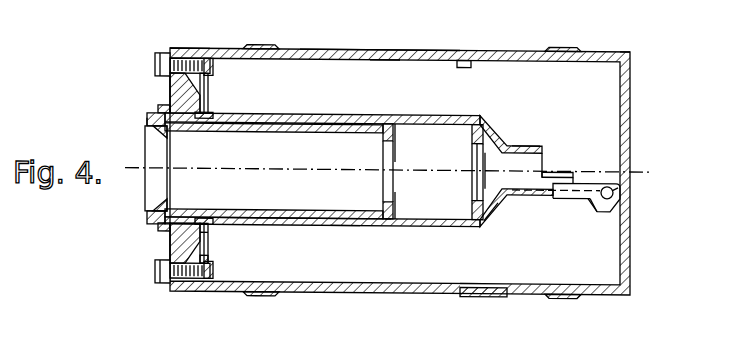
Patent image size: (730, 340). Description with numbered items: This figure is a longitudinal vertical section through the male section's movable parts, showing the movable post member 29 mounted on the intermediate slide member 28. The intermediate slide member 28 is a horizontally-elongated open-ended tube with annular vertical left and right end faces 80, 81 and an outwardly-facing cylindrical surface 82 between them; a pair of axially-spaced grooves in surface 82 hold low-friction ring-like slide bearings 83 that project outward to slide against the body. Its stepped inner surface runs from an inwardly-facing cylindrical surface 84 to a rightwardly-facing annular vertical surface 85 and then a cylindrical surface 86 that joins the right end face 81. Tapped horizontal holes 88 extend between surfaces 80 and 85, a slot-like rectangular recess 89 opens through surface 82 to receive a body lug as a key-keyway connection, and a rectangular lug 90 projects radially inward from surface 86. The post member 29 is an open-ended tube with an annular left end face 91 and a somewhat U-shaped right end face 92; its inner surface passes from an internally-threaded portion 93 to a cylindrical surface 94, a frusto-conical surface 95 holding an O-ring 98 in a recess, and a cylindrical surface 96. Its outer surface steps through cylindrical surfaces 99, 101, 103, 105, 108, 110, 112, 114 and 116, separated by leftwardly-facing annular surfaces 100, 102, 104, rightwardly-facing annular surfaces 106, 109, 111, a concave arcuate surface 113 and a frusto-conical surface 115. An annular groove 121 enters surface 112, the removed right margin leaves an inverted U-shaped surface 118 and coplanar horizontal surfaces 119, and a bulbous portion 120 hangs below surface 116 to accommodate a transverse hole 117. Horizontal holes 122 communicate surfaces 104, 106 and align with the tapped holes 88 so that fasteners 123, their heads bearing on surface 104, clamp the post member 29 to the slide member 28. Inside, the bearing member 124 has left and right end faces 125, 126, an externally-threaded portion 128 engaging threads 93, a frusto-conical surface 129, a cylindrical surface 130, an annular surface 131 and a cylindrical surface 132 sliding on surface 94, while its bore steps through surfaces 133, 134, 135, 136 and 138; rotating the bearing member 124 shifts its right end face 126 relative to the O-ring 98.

The intermediate slide member 28 is at (633, 91).
The movable post member 29 is at (508, 131).
The left end face 80 is at (188, 48).
The right end face 81 is at (632, 52).
The outwardly-facing horizontal cylindrical surface 82 is at (378, 48).
The slide bearings 83 is at (258, 43).
The inwardly-facing horizontal cylindrical surface 84 is at (209, 90).
The rightwardly-facing annular vertical surface 85 is at (214, 70).
The inwardly-facing horizontal cylindrical surface 86 is at (386, 60).
The tapped horizontal holes 88 is at (193, 52).
The slot-like rectangular recess 89 is at (468, 295).
The rectangular lug 90 is at (465, 66).
The left end face 91 is at (150, 118).
The right end face 92 is at (620, 190).
The internally-threaded portion 93 is at (150, 124).
The inwardly-facing horizontal cylindrical surface 94 is at (440, 217).
The frusto-conical surface 95 is at (484, 150).
The inwardly-facing horizontal cylindrical surface 96 is at (537, 186).
The O-ring 98 is at (471, 135).
The outwardly-facing horizontal cylindrical surface 99 is at (160, 109).
The leftwardly-facing annular vertical surface 100 is at (162, 229).
The outwardly-facing horizontal cylindrical surface 101 is at (170, 100).
The leftwardly-facing annular vertical surface 102 is at (170, 236).
The outwardly-facing horizontal cylindrical surface 103 is at (175, 95).
The leftwardly-facing annular vertical surface 104 is at (175, 246).
The outwardly-facing horizontal cylindrical surface 105 is at (167, 285).
The rightwardly-facing annular vertical surface 106 is at (180, 291).
The outwardly-facing horizontal cylindrical surface 108 is at (197, 291).
The rightwardly-facing annular vertical surface 109 is at (208, 262).
The outwardly-facing horizontal cylindrical surface 110 is at (210, 250).
The rightwardly-facing annular vertical surface 111 is at (206, 245).
The outwardly-facing horizontal cylindrical surface 112 is at (210, 236).
The annular concave arcuate surface 113 is at (214, 228).
The outwardly-facing horizontal cylindrical surface 114 is at (345, 225).
The frusto-conical surface 115 is at (491, 216).
The outwardly-facing horizontal cylindrical surface 116 is at (580, 196).
The transverse hole 117 is at (596, 207).
The inverted U-shaped vertical surface 118 is at (546, 165).
The coplanar horizontal surfaces 119 is at (574, 169).
The bulbous portion 120 is at (609, 209).
The annular groove 121 is at (214, 113).
The horizontal holes 122 is at (155, 69).
The fasteners 123 is at (155, 56).
The bearing member 124 is at (258, 132).
The left end face 125 is at (147, 180).
The right end face 126 is at (394, 136).
The externally-threaded portion 128 is at (155, 217).
The frusto-conical surface 129 is at (177, 209).
The outwardly-facing horizontal cylindrical surface 130 is at (297, 225).
The leftwardly-facing annular vertical surface 131 is at (387, 220).
The outwardly-facing horizontal cylindrical surface 132 is at (394, 221).
The inwardly-facing horizontal cylindrical surface 133 is at (158, 213).
The leftwardly-facing annular vertical surface 134 is at (158, 132).
The inwardly-facing horizontal cylindrical surface 135 is at (250, 131).
The leftwardly-facing annular vertical surface 136 is at (382, 135).
The inwardly-facing horizontal cylindrical surface 138 is at (382, 150).